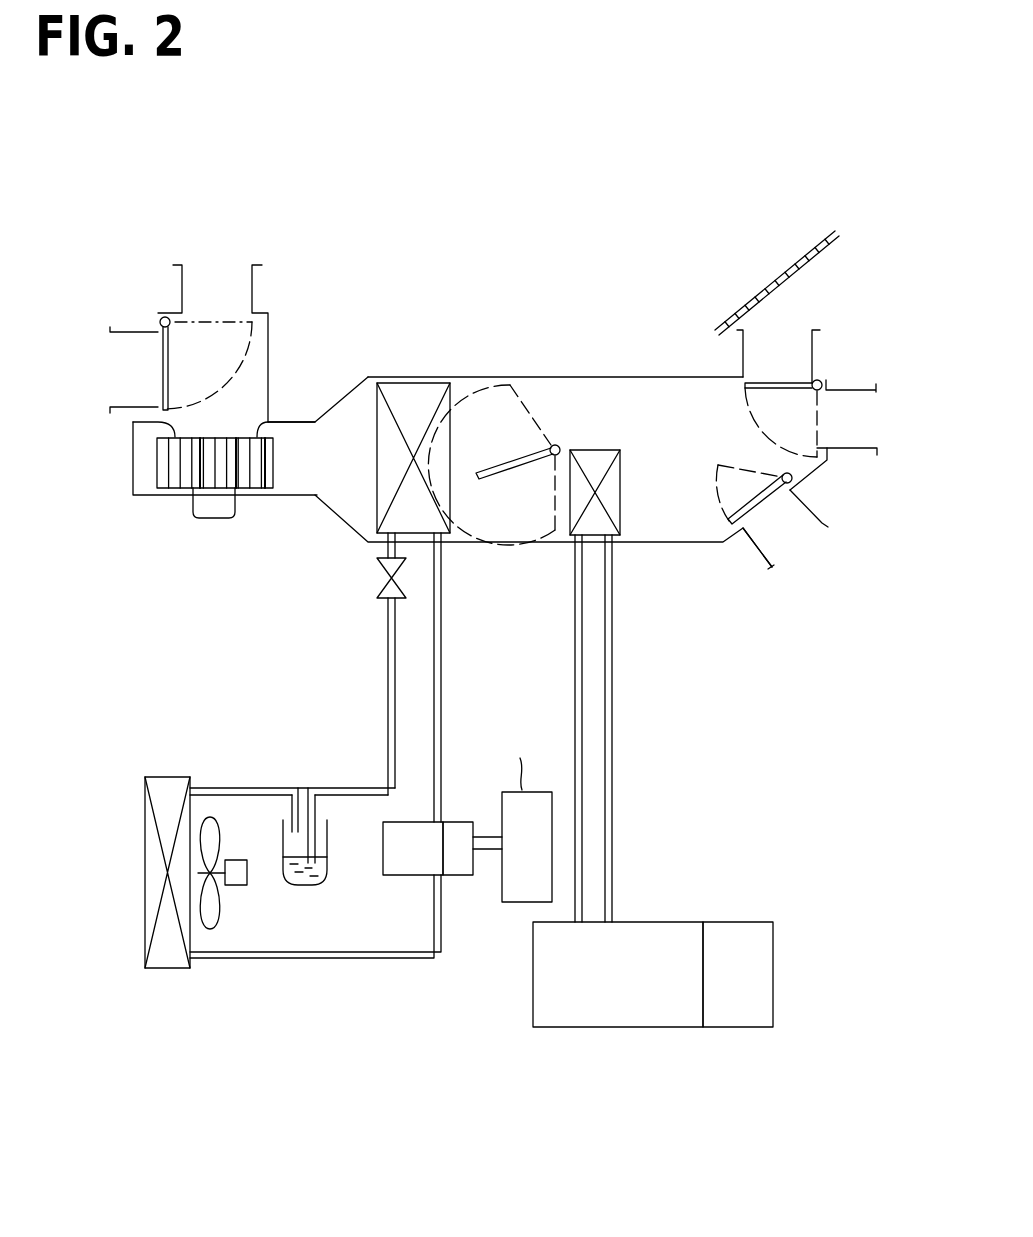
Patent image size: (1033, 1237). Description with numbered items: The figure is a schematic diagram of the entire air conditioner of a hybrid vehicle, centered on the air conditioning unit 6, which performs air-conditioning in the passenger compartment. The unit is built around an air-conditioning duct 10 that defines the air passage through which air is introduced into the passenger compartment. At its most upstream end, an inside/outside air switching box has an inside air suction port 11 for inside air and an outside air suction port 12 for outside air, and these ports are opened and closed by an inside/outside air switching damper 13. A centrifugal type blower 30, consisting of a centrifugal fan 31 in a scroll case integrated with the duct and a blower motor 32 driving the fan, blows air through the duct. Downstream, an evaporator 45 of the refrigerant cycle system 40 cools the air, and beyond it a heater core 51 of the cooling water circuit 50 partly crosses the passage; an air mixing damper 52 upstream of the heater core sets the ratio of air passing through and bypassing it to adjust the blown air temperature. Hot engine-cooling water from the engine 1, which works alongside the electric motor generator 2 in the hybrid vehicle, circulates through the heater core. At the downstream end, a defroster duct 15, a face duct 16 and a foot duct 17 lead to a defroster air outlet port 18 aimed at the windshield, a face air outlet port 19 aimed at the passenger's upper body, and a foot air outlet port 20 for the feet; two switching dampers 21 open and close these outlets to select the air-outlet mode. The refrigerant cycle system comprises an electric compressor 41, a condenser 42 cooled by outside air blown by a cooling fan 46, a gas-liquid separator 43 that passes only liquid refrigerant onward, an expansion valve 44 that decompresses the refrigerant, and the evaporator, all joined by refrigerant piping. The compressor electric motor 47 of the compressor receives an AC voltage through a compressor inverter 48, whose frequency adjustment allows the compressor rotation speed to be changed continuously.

The engine 1 is at (620, 1027).
The electric motor generator 2 is at (742, 1027).
The air conditioning unit 6 is at (592, 248).
The air-conditioning duct 10 is at (545, 377).
The inside air suction port 11 is at (122, 360).
The outside air suction port 12 is at (212, 274).
The inside/outside air switching damper 13 is at (157, 384).
The defroster duct 15 is at (743, 353).
The face duct 16 is at (853, 453).
The foot duct 17 is at (823, 518).
The defroster air outlet port 18 is at (773, 342).
The face air outlet port 19 is at (858, 420).
The foot air outlet port 20 is at (783, 537).
The switching dampers 21 is at (790, 382).
The blower 30 is at (175, 539).
The centrifugal fan 31 is at (273, 472).
The blower motor 32 is at (210, 518).
The refrigerant cycle system 40 is at (249, 763).
The electric compressor 41 is at (397, 877).
The condenser 42 is at (160, 968).
The gas-liquid separator 43 is at (305, 887).
The expansion valve 44 is at (377, 565).
The evaporator 45 is at (403, 382).
The cooling fan 46 is at (213, 928).
The compressor electric motor 47 is at (462, 877).
The compressor inverter 48 is at (512, 903).
The cooling water circuit 50 is at (620, 787).
The heater core 51 is at (620, 497).
The air mixing damper 52 is at (520, 475).